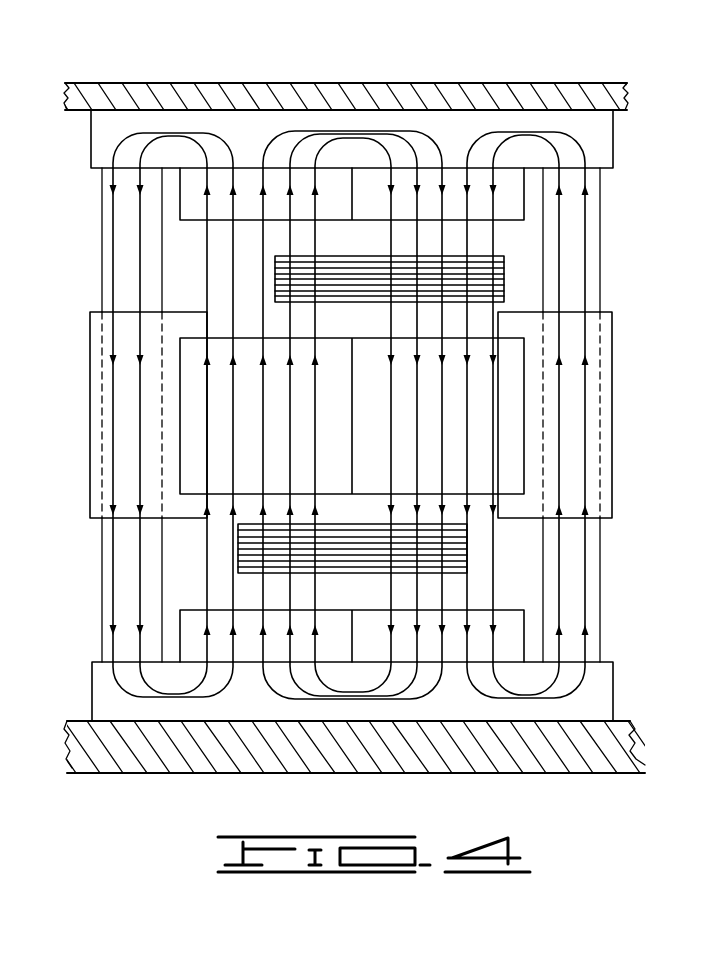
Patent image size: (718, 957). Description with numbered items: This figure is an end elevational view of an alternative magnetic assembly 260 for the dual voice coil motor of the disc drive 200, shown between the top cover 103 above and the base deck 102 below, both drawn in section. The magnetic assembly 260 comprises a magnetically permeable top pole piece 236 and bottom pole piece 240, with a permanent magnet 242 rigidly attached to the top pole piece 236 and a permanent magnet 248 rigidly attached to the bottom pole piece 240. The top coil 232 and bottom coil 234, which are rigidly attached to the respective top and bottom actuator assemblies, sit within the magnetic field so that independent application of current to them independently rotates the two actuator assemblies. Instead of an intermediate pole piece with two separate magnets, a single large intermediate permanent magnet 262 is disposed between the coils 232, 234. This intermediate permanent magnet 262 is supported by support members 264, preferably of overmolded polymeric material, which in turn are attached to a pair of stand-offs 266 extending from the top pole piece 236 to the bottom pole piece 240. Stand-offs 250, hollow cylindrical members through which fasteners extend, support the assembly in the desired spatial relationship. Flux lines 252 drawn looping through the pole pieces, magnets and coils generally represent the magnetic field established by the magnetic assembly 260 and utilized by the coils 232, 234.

The base deck 102 is at (523, 760).
The top cover 103 is at (217, 100).
The disc drive 200 is at (426, 69).
The top coil 232 is at (285, 285).
The bottom coil 234 is at (262, 548).
The top pole piece 236 is at (582, 148).
The bottom pole piece 240 is at (597, 686).
The permanent magnet 242 is at (505, 192).
The permanent magnet 248 is at (508, 617).
The stand-offs 250 is at (271, 415).
The flux lines 252 is at (192, 706).
The magnetic assembly 260 is at (300, 415).
The intermediate permanent magnet 262 is at (513, 363).
The support members 264 is at (100, 368).
The stand-offs 266 is at (120, 594).